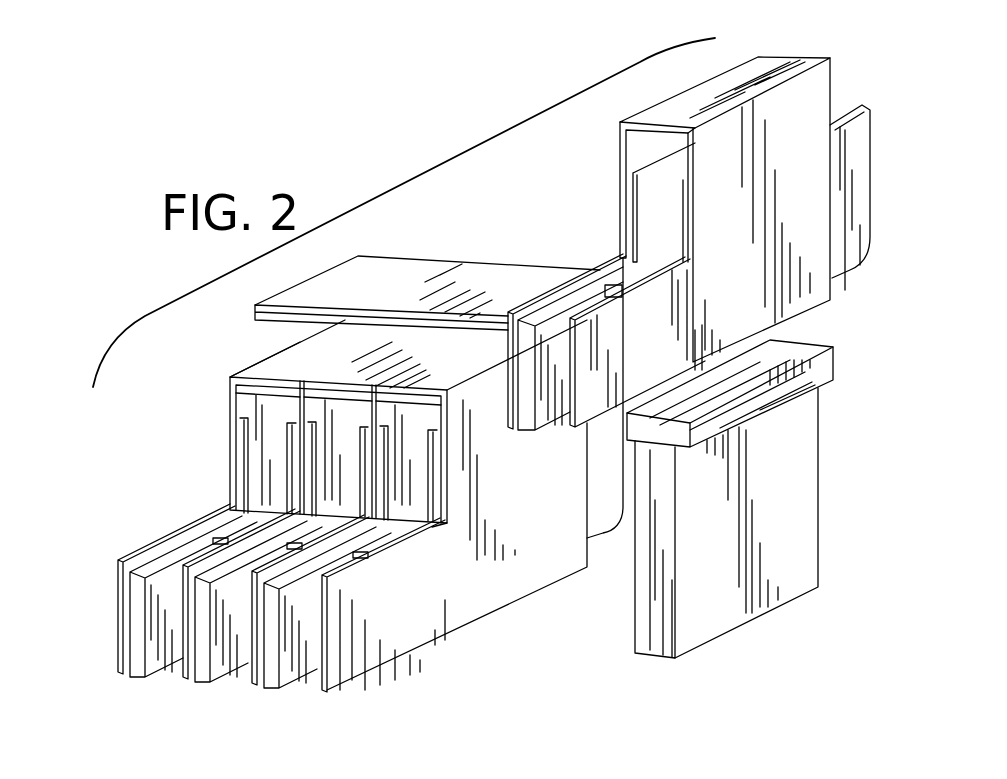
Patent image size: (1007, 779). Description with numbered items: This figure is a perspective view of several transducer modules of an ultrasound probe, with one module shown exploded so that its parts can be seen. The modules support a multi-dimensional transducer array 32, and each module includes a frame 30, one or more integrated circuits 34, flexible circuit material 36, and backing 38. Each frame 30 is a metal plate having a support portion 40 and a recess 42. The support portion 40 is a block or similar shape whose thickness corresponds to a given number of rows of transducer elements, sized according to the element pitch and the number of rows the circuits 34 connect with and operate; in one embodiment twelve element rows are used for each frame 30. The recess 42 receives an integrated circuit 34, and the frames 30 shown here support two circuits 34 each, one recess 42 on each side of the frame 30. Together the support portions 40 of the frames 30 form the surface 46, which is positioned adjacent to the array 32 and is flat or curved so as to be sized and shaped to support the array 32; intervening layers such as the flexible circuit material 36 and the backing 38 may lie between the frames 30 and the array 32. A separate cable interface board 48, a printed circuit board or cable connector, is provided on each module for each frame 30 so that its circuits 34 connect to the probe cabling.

The frame 30 is at (268, 437).
The multi-dimensional transducer array 32 is at (392, 268).
The integrated circuit 34 is at (240, 471).
The flexible circuit material 36 is at (520, 512).
The backing 38 is at (650, 137).
The support portion 40 is at (790, 353).
The recess 42 is at (793, 478).
The surface 46 is at (285, 356).
The cable interface board 48 is at (140, 597).